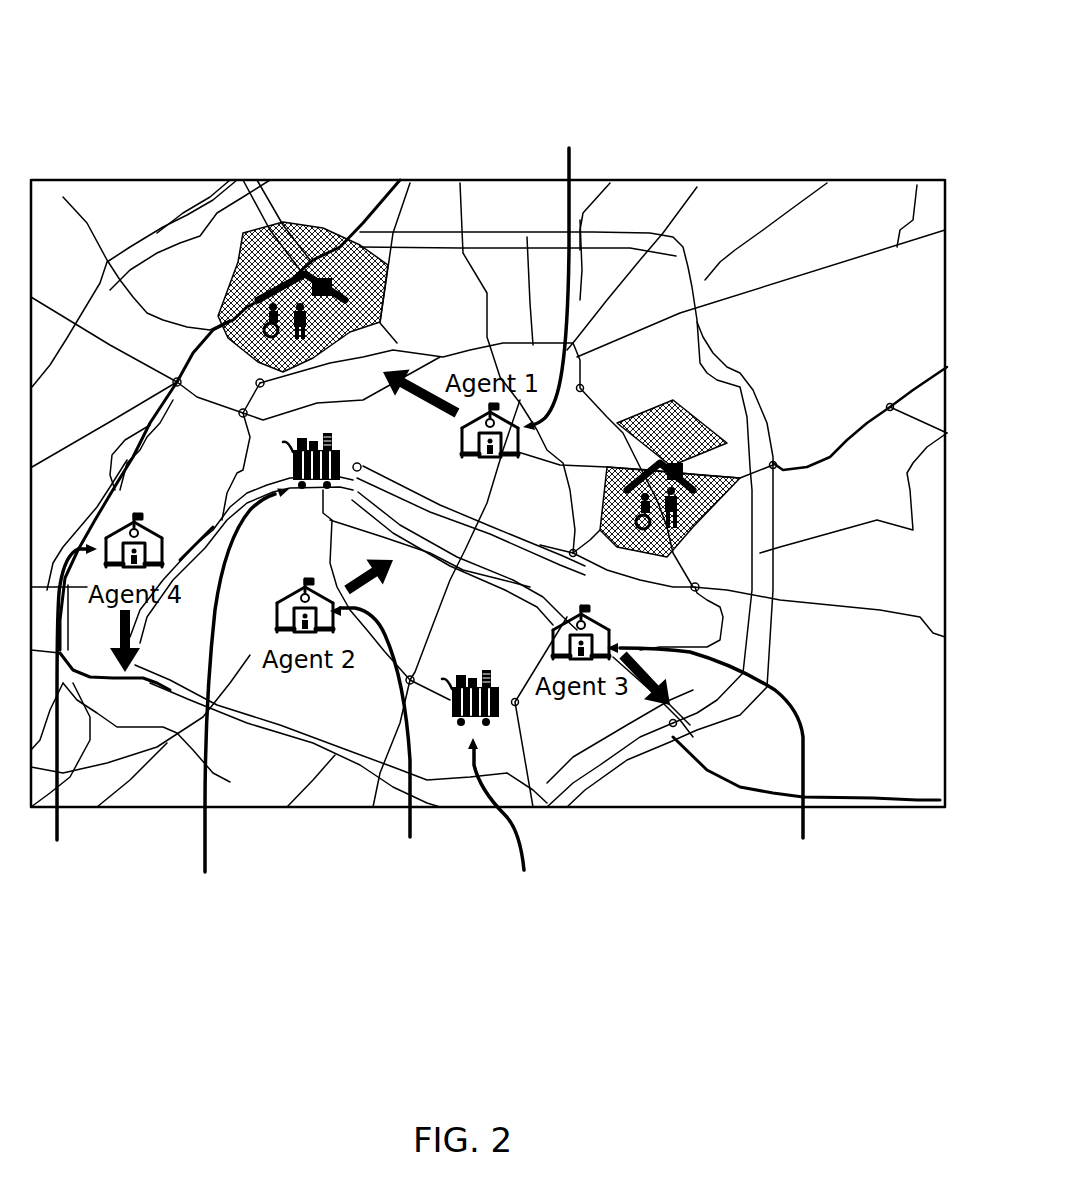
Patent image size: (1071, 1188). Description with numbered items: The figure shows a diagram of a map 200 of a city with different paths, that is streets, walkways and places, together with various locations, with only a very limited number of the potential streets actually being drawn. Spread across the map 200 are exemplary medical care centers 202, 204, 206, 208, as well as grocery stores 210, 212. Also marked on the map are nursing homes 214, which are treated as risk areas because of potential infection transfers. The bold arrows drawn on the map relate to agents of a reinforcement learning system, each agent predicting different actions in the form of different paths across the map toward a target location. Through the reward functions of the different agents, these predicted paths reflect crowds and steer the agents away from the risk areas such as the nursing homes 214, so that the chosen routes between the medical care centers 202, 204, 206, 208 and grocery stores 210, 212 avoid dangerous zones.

The map 200 is at (210, 55).
The medical care center 202 is at (381, 746).
The medical care center 204 is at (68, 722).
The medical care center 206 is at (710, 768).
The medical care center 208 is at (558, 267).
The grocery store 210 is at (495, 797).
The grocery store 212 is at (258, 680).
The nursing home 214 is at (316, 222).